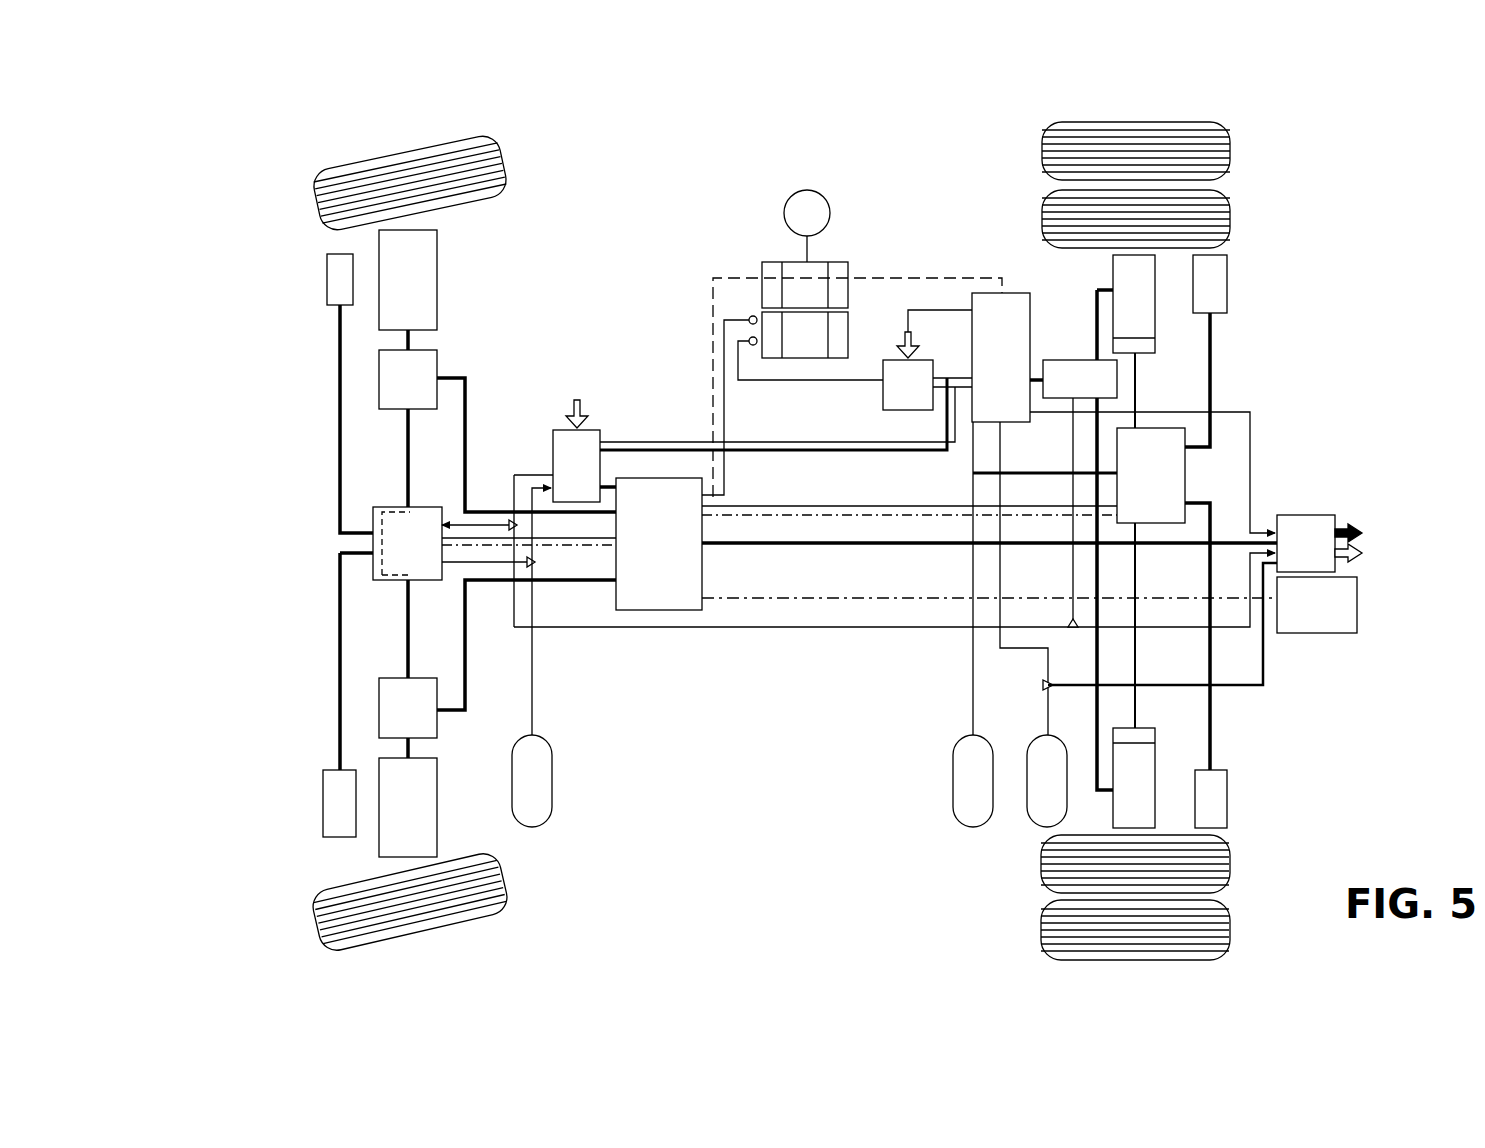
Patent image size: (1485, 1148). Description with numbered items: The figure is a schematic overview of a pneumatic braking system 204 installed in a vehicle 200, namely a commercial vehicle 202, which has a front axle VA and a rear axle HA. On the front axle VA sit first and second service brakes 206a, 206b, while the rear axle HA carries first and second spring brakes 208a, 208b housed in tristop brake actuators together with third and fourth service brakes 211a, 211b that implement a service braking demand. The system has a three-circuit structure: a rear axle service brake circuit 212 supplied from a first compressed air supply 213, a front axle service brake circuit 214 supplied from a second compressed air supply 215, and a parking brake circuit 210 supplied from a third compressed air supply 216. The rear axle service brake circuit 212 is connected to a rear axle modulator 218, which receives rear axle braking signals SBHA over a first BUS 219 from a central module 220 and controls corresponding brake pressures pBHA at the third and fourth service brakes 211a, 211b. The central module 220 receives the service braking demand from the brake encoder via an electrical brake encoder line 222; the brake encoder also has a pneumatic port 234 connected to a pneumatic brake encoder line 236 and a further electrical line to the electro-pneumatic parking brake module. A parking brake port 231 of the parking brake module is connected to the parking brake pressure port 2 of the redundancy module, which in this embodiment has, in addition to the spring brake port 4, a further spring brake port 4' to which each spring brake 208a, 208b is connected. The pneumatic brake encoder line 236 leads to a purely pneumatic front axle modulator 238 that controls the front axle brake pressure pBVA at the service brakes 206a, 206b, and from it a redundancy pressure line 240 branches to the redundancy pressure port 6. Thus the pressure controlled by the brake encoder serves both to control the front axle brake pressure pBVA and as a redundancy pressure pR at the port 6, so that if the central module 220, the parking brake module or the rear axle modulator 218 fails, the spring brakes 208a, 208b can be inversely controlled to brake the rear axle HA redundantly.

The vehicle 200 is at (228, 188).
The commercial vehicle 202 is at (228, 188).
The front axle VA is at (412, 144).
The rear axle HA is at (1130, 108).
The pneumatic braking system 204 is at (640, 198).
The first service brake 206a is at (437, 278).
The second service brake 206b is at (437, 825).
The first spring brake 208a is at (1155, 330).
The second spring brake 208b is at (1157, 762).
The parking brake circuit 210 is at (1000, 248).
The third service brake 211a is at (1155, 345).
The fourth service brake 211b is at (1155, 732).
The rear axle service brake circuit 212 is at (957, 700).
The first compressed air supply 213 is at (953, 808).
The front axle service brake circuit 214 is at (556, 692).
The second compressed air supply 215 is at (552, 800).
The third compressed air supply 216 is at (1027, 820).
The rear axle modulator 218 is at (1185, 478).
The first BUS 219 is at (780, 505).
The central module 220 is at (702, 573).
The electrical brake encoder line 222 is at (608, 440).
The parking brake port 231 is at (1040, 372).
The pneumatic port 234 is at (552, 482).
The pneumatic brake encoder line 236 is at (552, 490).
The front axle modulator 238 is at (372, 560).
The redundancy pressure line 240 is at (1072, 470).
The parking brake pressure port 2 is at (1043, 375).
The spring brake port 4 is at (1090, 540).
The further spring brake port 4' is at (1140, 399).
The redundancy pressure port 6 is at (1074, 410).
The front axle brake pressure pBVA is at (406, 465).
The rear axle brake pressure pBHA is at (1140, 380).
The redundancy pressure pR is at (778, 630).
The rear axle braking signals SBHA is at (830, 506).